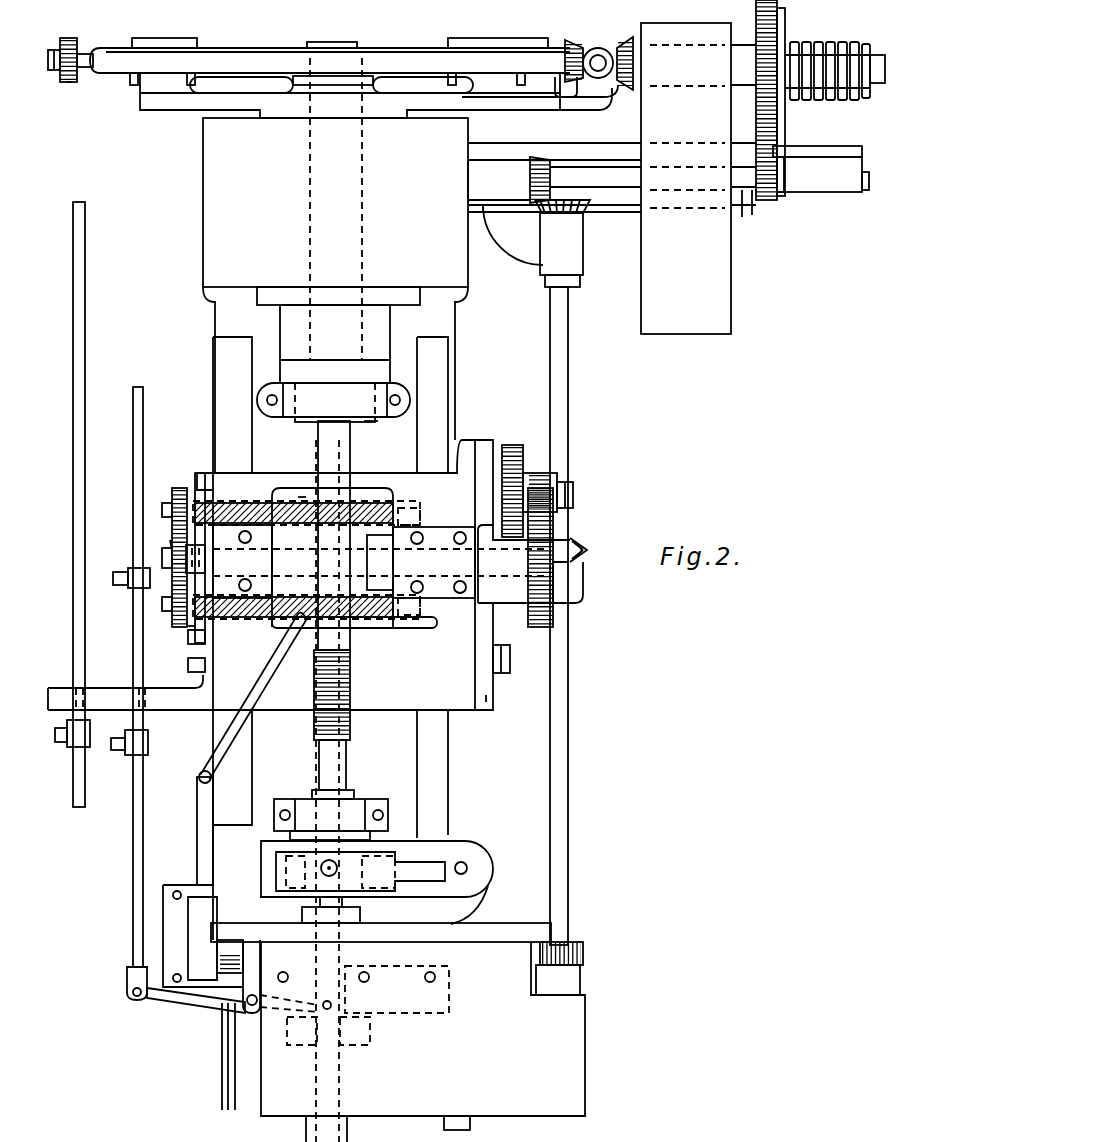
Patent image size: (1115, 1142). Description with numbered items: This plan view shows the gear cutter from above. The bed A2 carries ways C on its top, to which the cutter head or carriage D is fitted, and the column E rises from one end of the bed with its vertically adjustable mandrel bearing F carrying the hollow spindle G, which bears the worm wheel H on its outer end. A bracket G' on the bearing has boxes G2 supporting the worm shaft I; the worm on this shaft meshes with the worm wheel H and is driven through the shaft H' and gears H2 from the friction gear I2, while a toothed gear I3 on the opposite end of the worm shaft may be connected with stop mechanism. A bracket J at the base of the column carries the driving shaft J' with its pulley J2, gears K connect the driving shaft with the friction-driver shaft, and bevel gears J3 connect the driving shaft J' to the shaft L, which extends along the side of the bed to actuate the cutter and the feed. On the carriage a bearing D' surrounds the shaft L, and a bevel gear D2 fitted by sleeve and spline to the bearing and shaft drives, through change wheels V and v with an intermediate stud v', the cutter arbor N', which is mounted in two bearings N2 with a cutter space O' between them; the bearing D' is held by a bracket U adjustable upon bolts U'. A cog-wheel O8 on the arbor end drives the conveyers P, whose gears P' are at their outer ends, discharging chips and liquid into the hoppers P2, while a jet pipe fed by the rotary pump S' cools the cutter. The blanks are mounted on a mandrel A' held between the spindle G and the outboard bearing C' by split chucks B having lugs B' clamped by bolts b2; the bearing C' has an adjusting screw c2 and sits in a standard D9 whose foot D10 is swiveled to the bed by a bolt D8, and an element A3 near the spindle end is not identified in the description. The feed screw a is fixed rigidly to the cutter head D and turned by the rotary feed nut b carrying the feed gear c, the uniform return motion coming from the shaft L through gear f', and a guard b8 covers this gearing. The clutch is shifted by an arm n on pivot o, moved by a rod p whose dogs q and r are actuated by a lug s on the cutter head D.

The worm wheel H is at (330, 43).
The worm shaft I is at (85, 46).
The toothed gear I3 is at (66, 82).
The boxes G2 is at (170, 46).
The hollow spindle G is at (332, 29).
The bracket G' is at (390, 116).
The shaft H' is at (540, 58).
The gears H2 is at (620, 44).
The column E is at (203, 212).
The mandrel bearing F is at (262, 296).
The ways C is at (330, 638).
The bracket J is at (637, 193).
The bevel gears J3 is at (583, 213).
The driving shaft J' is at (747, 218).
The pulley J2 is at (731, 297).
The friction gear I2 is at (781, 24).
The gears K is at (772, 165).
The shaft L is at (568, 410).
The cutter head or carriage D is at (340, 575).
The cutter arbor N' is at (332, 557).
The bearings N2 is at (248, 583).
The conveyers or worm carriers P is at (306, 573).
The gears P' is at (180, 548).
The spout or hopper P2 is at (187, 628).
The cog-wheel O8 is at (170, 545).
The space O' is at (305, 471).
The lugs B' is at (331, 611).
The bolts b2 is at (266, 400).
The split chuck B is at (334, 423).
The bed A2 is at (372, 421).
The mandrel A' is at (355, 781).
The feed screw a is at (345, 732).
The spindle end A3 is at (342, 790).
The change wheel v is at (529, 473).
The intermediate stud v' is at (584, 491).
The change wheels V is at (554, 620).
The bearing D' is at (551, 564).
The bevel gear D2 is at (588, 549).
The bolts U' is at (520, 659).
The bracket U is at (503, 698).
The lug s is at (292, 630).
The rotary pump S' is at (208, 934).
The arm n is at (201, 1006).
The pivot o is at (249, 1010).
The rod p is at (133, 652).
The dog q is at (130, 588).
The dog r is at (128, 755).
The standard foot D10 is at (476, 843).
The outboard bearing C' is at (360, 865).
The adjusting screw c2 is at (339, 875).
The bolt D8 is at (468, 868).
The standard D9 is at (418, 883).
The guard b8 is at (585, 1050).
The gear f' is at (574, 965).
The feed nut b is at (348, 962).
The feed gear c is at (370, 1033).